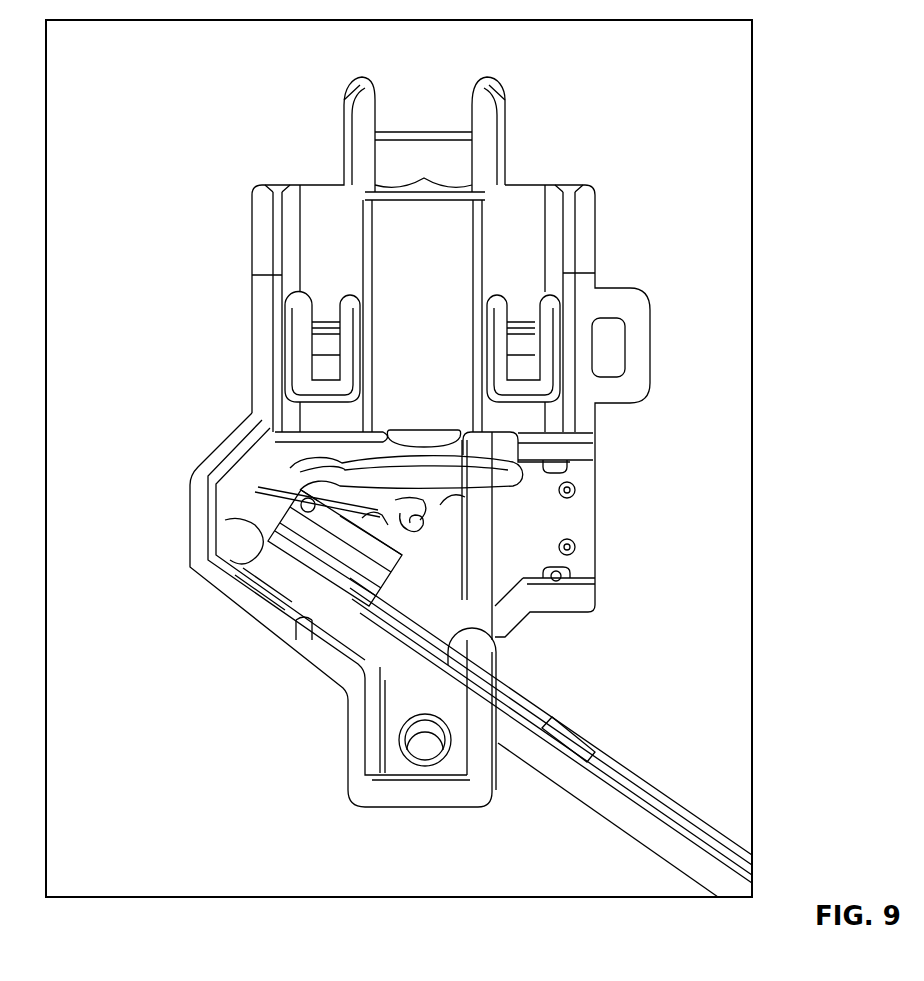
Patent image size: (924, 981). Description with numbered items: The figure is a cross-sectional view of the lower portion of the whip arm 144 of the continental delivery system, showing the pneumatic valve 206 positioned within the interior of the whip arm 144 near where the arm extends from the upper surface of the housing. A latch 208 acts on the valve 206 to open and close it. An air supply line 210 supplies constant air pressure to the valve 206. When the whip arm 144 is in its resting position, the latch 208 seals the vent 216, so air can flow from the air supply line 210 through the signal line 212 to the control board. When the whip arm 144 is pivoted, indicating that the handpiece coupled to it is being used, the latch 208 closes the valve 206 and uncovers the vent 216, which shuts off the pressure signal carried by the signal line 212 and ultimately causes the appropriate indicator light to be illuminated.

The whip arm 144 is at (520, 213).
The pneumatic valve 206 is at (255, 492).
The latch 208 is at (433, 497).
The air supply line 210 is at (670, 803).
The signal line 212 is at (640, 827).
The vent 216 is at (300, 625).